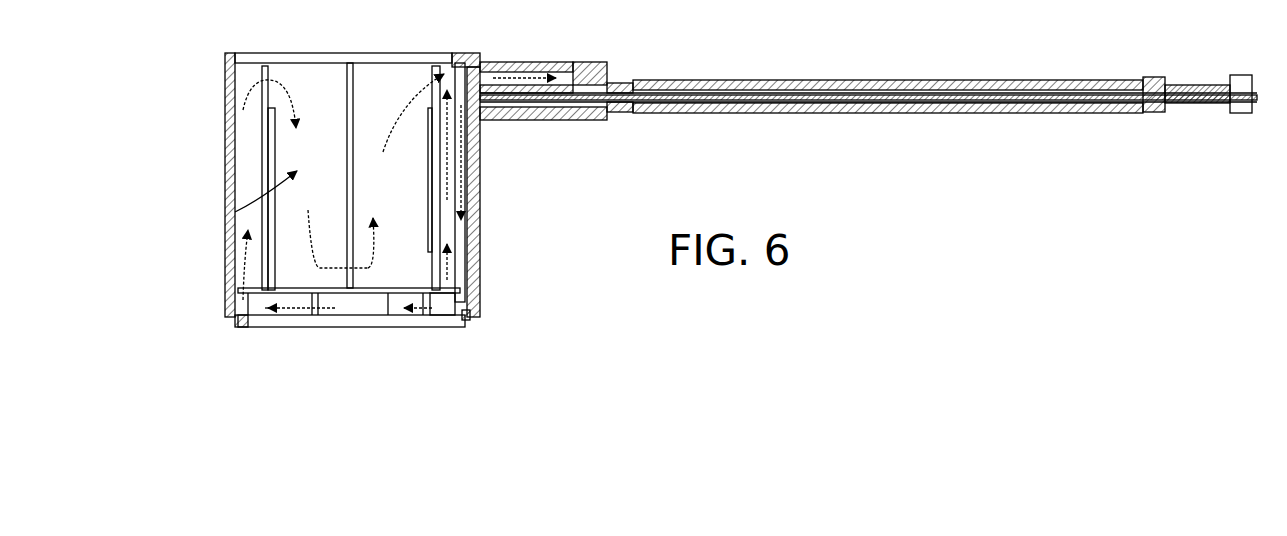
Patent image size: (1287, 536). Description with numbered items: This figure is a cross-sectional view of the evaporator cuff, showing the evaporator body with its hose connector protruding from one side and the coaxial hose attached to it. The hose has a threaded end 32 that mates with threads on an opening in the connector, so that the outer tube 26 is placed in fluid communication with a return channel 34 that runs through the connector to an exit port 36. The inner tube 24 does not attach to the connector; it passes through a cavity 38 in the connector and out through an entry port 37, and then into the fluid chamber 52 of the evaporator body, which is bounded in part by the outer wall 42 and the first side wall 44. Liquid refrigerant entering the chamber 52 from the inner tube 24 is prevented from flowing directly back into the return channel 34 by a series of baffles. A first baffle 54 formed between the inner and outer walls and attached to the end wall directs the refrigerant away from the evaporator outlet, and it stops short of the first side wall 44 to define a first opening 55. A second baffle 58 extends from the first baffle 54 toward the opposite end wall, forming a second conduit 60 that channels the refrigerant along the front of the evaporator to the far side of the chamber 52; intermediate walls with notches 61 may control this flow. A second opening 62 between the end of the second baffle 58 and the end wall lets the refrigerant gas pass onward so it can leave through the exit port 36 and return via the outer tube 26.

The inner tube 24 is at (688, 85).
The outer tube 26 is at (788, 80).
The threaded end 32 is at (612, 112).
The return channel 34 is at (561, 61).
The exit port 36 is at (484, 62).
The entry port 37 is at (485, 119).
The cavity 38 is at (547, 119).
The outer wall 42 is at (226, 150).
The first side wall 44 is at (466, 324).
The fluid chamber 52 is at (228, 191).
The first baffle 54 is at (465, 258).
The first opening 55 is at (450, 312).
The second baffle 58 is at (384, 300).
The second conduit 60 is at (330, 318).
The notches 61 is at (250, 318).
The second opening 62 is at (232, 318).